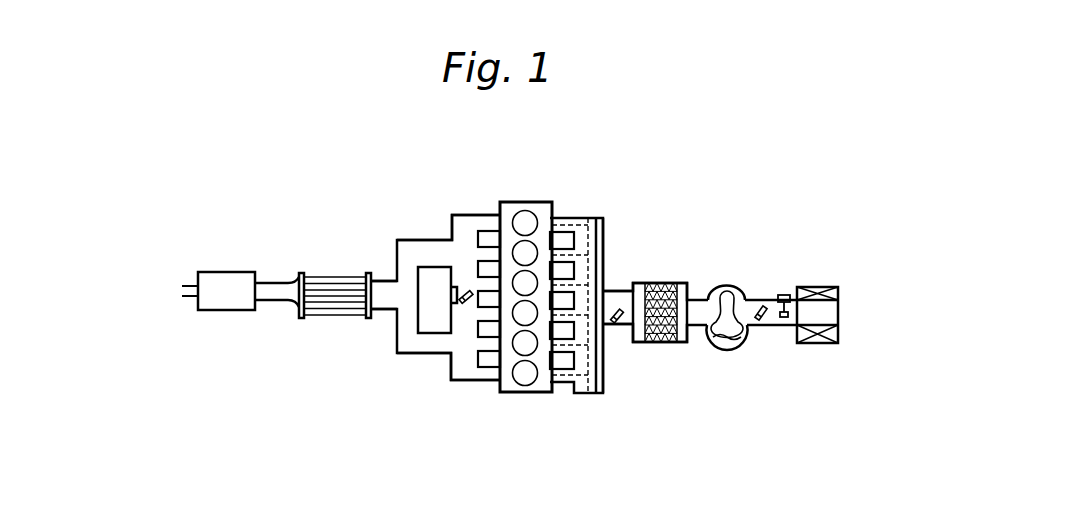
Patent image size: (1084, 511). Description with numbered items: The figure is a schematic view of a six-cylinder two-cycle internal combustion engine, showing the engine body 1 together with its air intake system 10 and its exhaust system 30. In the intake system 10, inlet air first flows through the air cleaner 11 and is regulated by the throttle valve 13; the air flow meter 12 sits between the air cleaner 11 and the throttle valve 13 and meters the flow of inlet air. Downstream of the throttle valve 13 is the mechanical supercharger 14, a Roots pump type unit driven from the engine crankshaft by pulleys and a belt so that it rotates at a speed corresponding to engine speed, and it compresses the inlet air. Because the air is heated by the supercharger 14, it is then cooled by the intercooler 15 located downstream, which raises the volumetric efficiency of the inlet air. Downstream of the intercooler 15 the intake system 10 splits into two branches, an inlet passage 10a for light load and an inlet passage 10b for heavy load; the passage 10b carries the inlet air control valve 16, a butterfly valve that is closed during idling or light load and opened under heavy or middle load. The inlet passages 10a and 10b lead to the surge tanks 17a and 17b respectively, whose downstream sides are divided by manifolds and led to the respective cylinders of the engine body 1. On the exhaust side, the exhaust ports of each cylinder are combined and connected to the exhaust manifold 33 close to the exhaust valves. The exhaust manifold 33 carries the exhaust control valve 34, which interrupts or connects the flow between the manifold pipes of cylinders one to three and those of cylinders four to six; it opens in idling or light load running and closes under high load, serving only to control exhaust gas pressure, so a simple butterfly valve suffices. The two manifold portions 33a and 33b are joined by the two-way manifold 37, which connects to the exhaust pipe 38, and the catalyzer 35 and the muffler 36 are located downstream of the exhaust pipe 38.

The engine body 1 is at (531, 199).
The air intake system 10 is at (724, 261).
The inlet passage for a light load 10a is at (617, 291).
The inlet passage for a heavy load 10b is at (612, 327).
The air cleaner 11 is at (820, 287).
The air flow meter 12 is at (782, 295).
The throttle valve 13 is at (762, 322).
The mechanical supercharger 14 is at (724, 346).
The intercooler 15 is at (661, 283).
The inlet air control valve 16 is at (620, 325).
The surge tank 17a is at (574, 218).
The surge tank 17b is at (598, 218).
The exhaust system 30 is at (332, 252).
The exhaust manifold 33 is at (463, 211).
The manifold portion 33a is at (480, 215).
The manifold portion 33b is at (468, 381).
The exhaust control valve 34 is at (466, 305).
The catalyzer 35 is at (334, 318).
The muffler 36 is at (233, 312).
The two-way manifold 37 is at (396, 345).
The exhaust pipe 38 is at (388, 281).